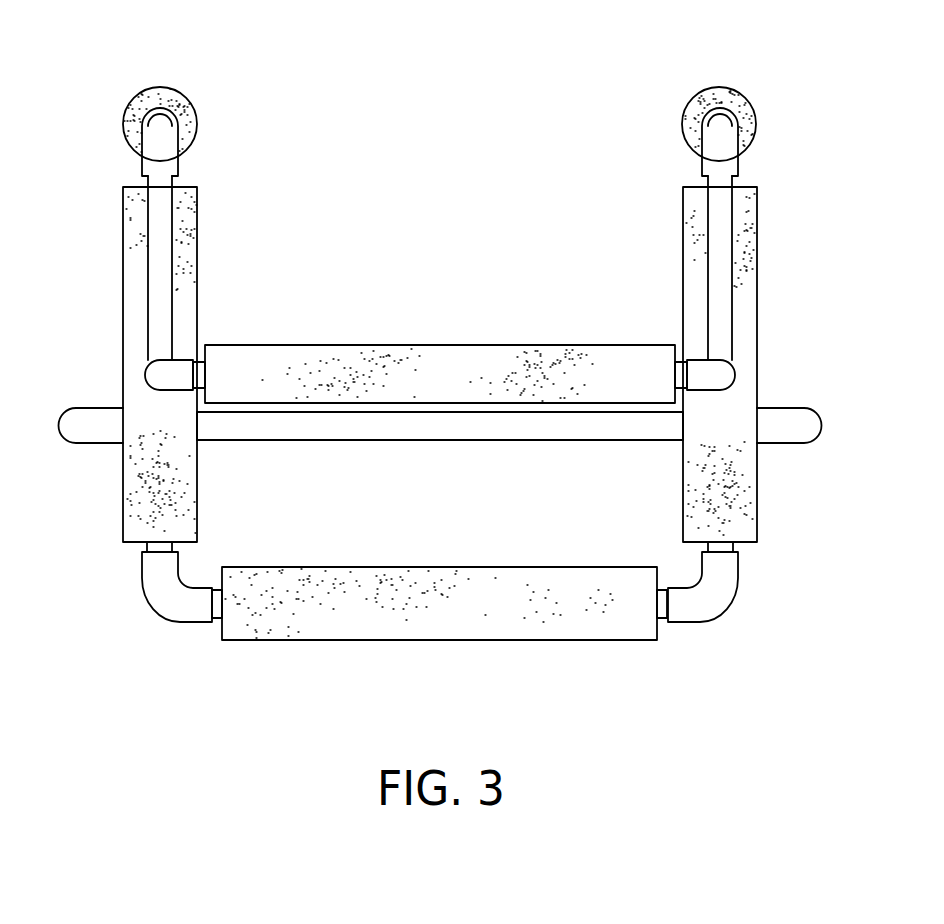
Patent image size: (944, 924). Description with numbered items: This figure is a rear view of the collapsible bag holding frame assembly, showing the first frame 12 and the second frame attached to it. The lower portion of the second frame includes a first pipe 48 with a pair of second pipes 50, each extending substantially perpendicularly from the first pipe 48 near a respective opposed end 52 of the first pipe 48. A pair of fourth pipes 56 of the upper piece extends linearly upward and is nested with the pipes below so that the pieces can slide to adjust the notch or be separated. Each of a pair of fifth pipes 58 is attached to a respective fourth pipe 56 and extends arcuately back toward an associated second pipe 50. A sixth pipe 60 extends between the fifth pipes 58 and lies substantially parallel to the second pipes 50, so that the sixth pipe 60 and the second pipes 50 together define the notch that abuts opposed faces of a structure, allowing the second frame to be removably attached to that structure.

The first frame 12 is at (790, 413).
The first pipe 48 is at (538, 626).
The second pipes 50 is at (681, 490).
The opposed ends 52 is at (692, 592).
The fourth pipes 56 is at (700, 114).
The fifth pipes 58 is at (175, 226).
The sixth pipe 60 is at (460, 360).